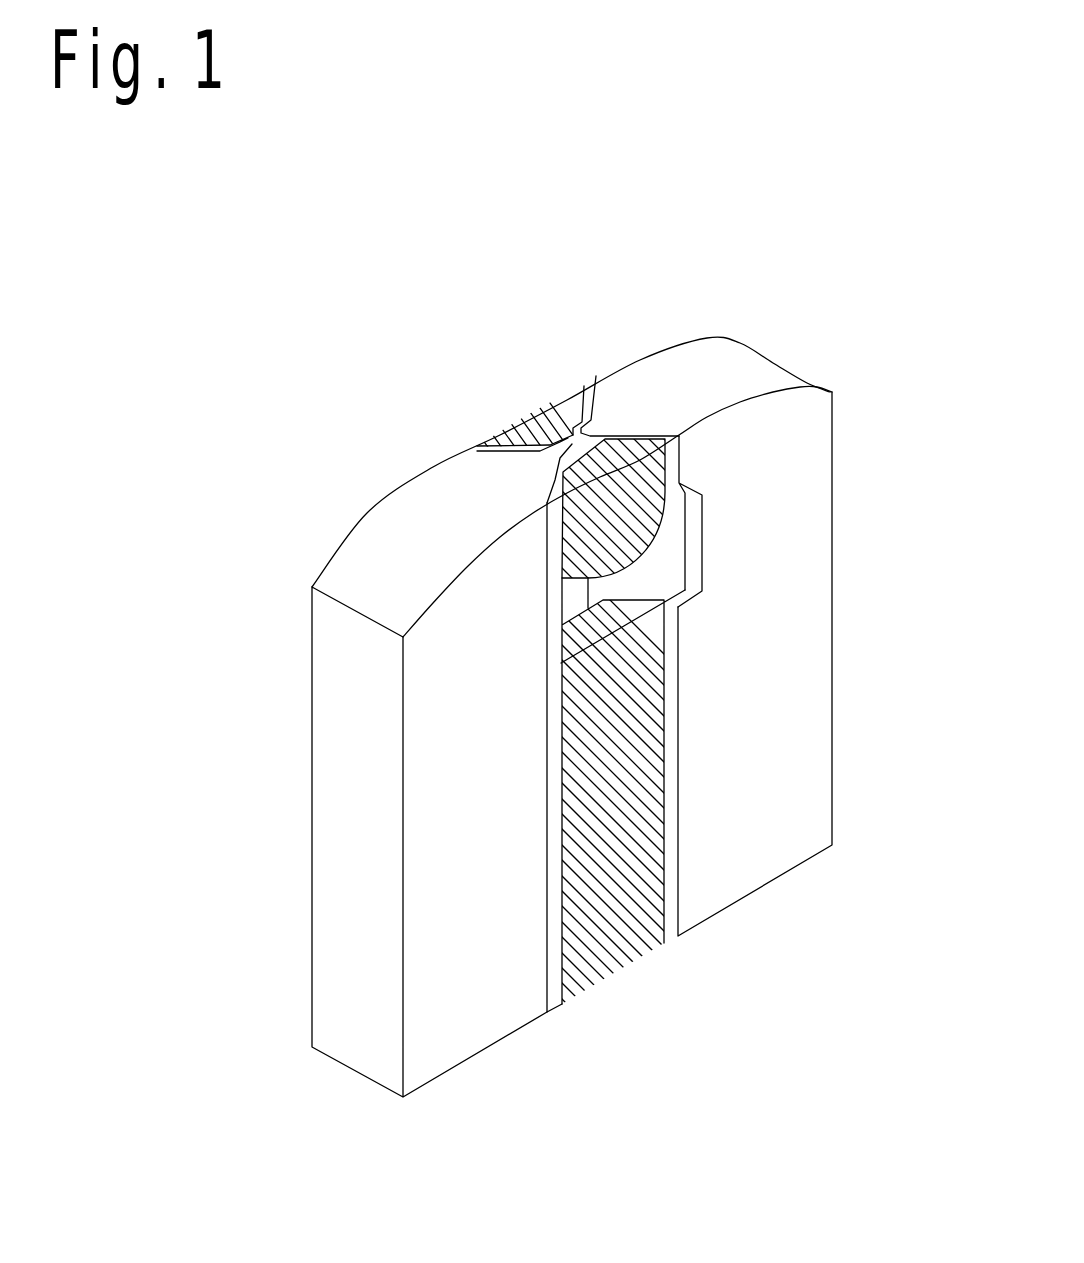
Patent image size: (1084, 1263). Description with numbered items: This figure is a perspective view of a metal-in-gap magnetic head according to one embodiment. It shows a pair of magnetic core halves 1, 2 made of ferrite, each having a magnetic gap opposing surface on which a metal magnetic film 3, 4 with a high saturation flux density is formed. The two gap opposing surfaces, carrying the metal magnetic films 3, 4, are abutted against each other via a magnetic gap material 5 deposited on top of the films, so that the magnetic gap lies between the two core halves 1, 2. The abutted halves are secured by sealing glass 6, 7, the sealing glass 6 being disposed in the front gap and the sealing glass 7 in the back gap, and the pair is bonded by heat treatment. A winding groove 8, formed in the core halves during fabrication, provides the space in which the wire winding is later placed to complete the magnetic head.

The magnetic core half 1 is at (345, 826).
The magnetic core half 2 is at (785, 766).
The metal magnetic film 3 is at (552, 978).
The metal magnetic film 4 is at (591, 390).
The magnetic gap material 5 is at (474, 448).
The sealing glass 6 is at (620, 505).
The sealing glass 7 is at (612, 943).
The winding groove 8 is at (670, 556).